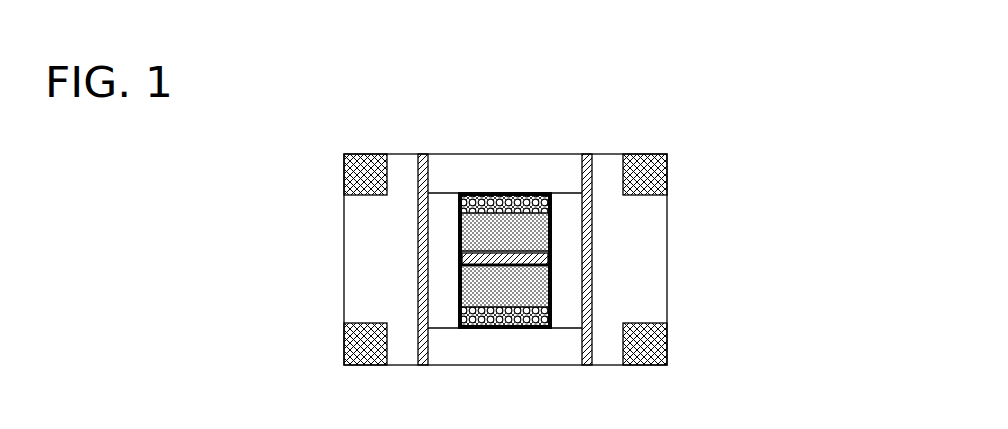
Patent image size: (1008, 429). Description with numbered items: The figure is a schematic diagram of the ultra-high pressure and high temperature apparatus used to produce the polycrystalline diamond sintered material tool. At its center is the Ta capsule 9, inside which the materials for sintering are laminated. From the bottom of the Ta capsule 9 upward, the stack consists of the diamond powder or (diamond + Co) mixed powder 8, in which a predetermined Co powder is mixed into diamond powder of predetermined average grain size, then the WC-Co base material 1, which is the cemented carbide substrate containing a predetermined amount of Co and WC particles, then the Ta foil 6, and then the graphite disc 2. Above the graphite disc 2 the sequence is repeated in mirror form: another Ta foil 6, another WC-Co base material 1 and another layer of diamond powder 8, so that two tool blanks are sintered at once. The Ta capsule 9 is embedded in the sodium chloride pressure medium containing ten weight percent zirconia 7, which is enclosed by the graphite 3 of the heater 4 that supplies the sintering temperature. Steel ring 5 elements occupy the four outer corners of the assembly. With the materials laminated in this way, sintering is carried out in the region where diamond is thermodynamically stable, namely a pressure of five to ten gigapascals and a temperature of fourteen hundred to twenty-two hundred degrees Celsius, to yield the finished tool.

The cemented carbide substrate 1 is at (483, 228).
The graphite disc 2 is at (487, 260).
The graphite 3 is at (427, 310).
The heater 4 is at (391, 259).
The steel ring 5 is at (640, 173).
The Ta foil 6 is at (552, 255).
The NaCl-10 wt % ZrO2 7 is at (637, 282).
The diamond raw material powder 8 is at (530, 318).
The Ta capsule 9 is at (492, 329).